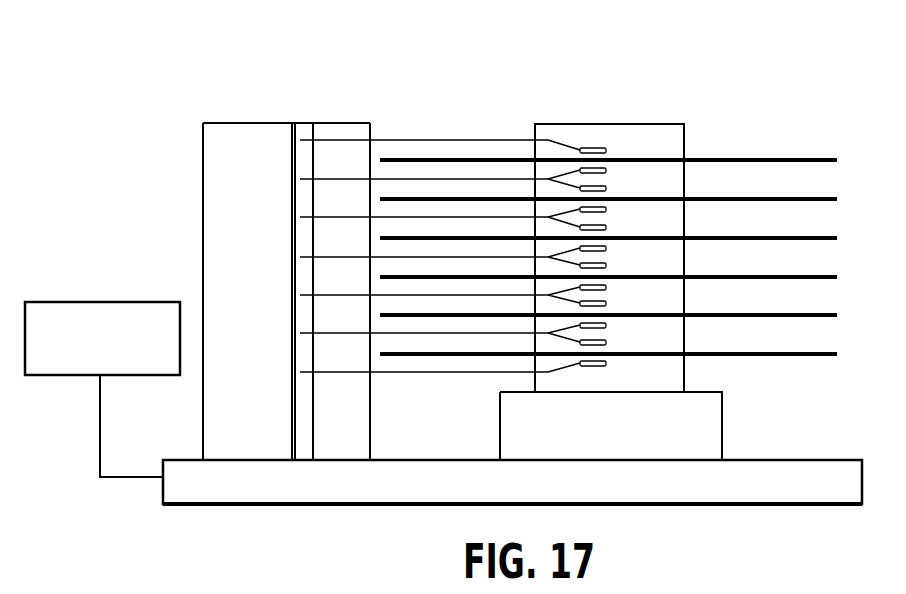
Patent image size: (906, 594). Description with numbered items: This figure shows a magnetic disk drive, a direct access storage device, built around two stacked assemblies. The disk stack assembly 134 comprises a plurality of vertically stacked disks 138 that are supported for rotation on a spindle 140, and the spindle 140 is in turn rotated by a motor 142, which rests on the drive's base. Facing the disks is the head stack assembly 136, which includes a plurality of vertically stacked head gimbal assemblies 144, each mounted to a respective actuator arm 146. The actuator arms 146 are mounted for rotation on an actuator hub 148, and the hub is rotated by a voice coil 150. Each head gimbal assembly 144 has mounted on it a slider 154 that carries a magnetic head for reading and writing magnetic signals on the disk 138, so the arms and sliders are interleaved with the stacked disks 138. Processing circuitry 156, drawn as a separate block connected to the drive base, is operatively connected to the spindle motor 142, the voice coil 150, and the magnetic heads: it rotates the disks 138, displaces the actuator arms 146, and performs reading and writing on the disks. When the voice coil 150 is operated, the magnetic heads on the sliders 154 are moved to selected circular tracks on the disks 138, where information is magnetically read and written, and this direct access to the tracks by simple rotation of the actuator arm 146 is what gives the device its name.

The disk stack assembly 134 is at (760, 106).
The head stack assembly 136 is at (410, 72).
The disks 138 is at (818, 160).
The spindle 140 is at (648, 123).
The motor 142 is at (722, 437).
The head gimbal assemblies 144 is at (580, 188).
The actuator arms 146 is at (462, 178).
The actuator hub 148 is at (335, 122).
The voice coil 150 is at (203, 200).
The slider 154 is at (606, 170).
The processing circuitry 156 is at (125, 302).